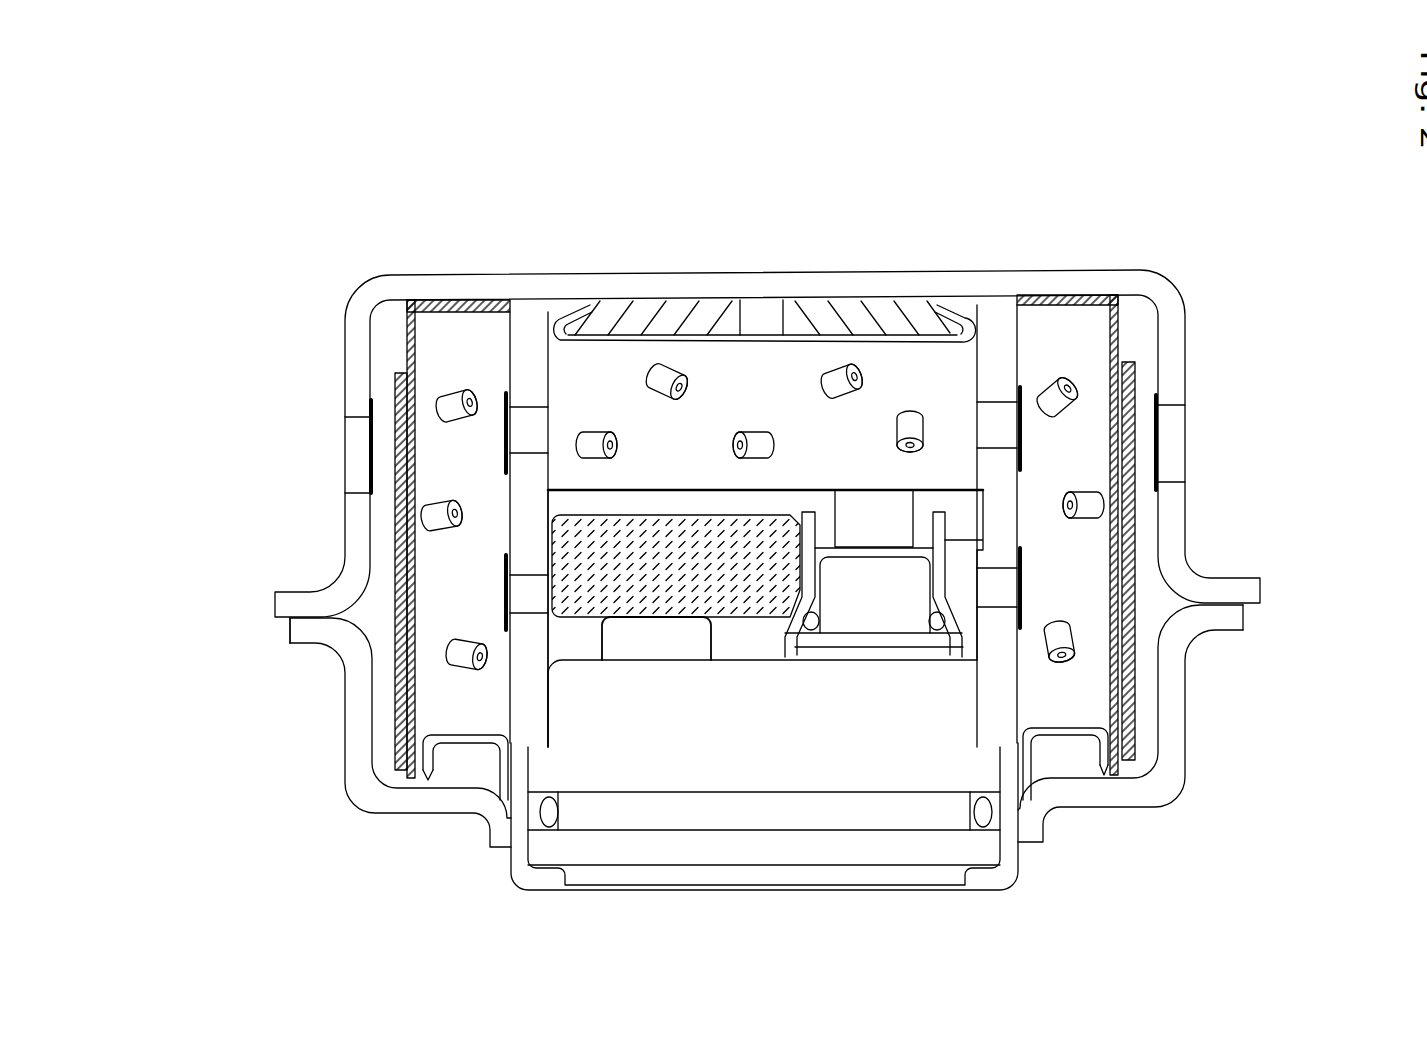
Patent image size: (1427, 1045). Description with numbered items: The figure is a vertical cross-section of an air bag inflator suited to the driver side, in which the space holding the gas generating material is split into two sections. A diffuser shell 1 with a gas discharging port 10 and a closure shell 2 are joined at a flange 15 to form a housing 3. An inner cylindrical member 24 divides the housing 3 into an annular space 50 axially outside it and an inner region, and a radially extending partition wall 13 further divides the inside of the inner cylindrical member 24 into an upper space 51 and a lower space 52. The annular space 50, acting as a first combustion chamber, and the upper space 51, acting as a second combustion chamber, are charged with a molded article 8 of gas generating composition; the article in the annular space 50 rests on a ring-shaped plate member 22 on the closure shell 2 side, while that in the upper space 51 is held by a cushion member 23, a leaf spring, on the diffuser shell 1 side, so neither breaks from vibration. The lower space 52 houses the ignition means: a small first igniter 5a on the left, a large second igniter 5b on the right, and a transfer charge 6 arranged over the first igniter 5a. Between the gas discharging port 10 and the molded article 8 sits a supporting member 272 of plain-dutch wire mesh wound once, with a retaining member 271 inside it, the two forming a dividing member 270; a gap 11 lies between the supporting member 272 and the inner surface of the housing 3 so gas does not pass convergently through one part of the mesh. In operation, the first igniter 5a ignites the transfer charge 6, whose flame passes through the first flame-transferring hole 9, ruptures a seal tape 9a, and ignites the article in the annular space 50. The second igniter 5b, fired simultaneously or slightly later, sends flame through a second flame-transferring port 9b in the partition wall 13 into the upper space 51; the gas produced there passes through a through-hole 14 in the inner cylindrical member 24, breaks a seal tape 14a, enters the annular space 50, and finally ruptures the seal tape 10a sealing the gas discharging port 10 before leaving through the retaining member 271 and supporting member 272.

The diffuser shell 1 is at (1183, 548).
The closure shell 2 is at (1173, 664).
The housing 3 is at (1347, 603).
The first igniter 5a is at (656, 638).
The second igniter 5b is at (874, 584).
The transfer charge 6 is at (680, 580).
The molded article of the gas generating composition 8 is at (468, 392).
The first flame-transferring hole 9 is at (508, 596).
The seal tape 9a is at (1022, 586).
The second flame-transferring port 9b is at (886, 496).
The gas discharging port 10 is at (353, 470).
The seal tape 10a is at (1162, 416).
The gap 11 is at (375, 625).
The partition wall 13 is at (698, 493).
The through-hole 14 is at (525, 430).
The seal tape 14a is at (1022, 450).
The flange 15 is at (262, 582).
The ring-shaped plate member 22 is at (471, 742).
The cushion member 23 is at (758, 310).
The inner cylindrical member 24 is at (986, 312).
The annular space (first combustion chamber) 50 is at (1086, 351).
The upper space (second combustion chamber) 51 is at (767, 401).
The lower space 52 is at (765, 651).
The dividing member 270 is at (250, 253).
The retaining member 271 is at (420, 318).
The supporting member 272 is at (398, 388).